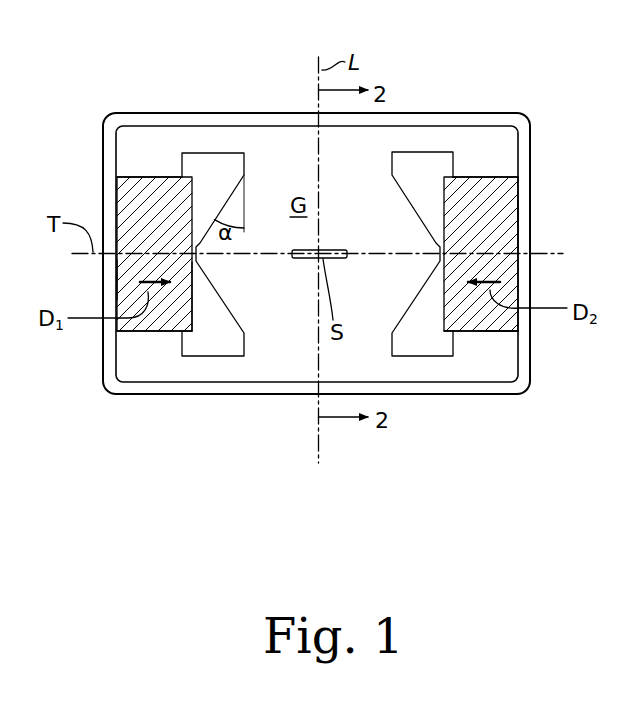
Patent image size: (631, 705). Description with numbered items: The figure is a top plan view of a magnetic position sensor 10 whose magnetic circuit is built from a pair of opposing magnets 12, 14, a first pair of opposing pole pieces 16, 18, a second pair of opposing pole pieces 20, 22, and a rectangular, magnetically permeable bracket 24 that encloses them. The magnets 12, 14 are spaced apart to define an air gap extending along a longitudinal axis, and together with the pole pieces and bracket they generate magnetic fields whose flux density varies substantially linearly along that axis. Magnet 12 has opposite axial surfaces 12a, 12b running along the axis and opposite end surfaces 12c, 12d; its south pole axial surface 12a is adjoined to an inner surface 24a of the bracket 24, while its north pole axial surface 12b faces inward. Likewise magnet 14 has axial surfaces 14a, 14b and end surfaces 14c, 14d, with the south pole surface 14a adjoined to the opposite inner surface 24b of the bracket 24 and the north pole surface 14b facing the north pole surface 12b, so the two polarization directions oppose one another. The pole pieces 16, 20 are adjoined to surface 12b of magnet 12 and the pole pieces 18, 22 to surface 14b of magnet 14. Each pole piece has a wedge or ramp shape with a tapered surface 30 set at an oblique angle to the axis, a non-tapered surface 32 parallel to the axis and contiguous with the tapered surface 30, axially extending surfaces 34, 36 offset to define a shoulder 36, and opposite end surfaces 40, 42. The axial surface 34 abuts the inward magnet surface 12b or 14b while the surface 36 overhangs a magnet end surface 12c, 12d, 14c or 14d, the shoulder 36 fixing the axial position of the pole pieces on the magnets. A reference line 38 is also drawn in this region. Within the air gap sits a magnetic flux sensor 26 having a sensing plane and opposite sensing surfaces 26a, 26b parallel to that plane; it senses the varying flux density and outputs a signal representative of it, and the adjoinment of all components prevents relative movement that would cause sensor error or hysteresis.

The magnetic position sensor 10 is at (127, 75).
The magnet 12 is at (150, 345).
The axial surface 12a is at (117, 290).
The axial surface 12b is at (193, 318).
The end surface 12c is at (138, 177).
The end surface 12d is at (170, 333).
The magnet 14 is at (500, 336).
The axial surface 14a is at (520, 224).
The axial surface 14b is at (478, 345).
The end surface 14c is at (503, 177).
The end surface 14d is at (505, 334).
The pole piece 16 is at (232, 150).
The pole piece 18 is at (437, 150).
The pole piece 20 is at (238, 358).
The pole piece 22 is at (427, 360).
The magnetically permeable bracket 24 is at (534, 140).
The inner surface 24a is at (118, 372).
The inner surface 24b is at (513, 362).
The magnetic flux sensor 26 is at (340, 263).
The sensing surface 26a is at (336, 250).
The sensing surface 26b is at (308, 259).
The tapered surface 30 is at (222, 236).
The non-tapered surface 32 is at (246, 154).
The axial surface 34 is at (163, 213).
The shoulder 36 is at (182, 165).
The magnet upper region 38 is at (163, 183).
The end surface 40 is at (213, 152).
The end surface 42 is at (200, 256).